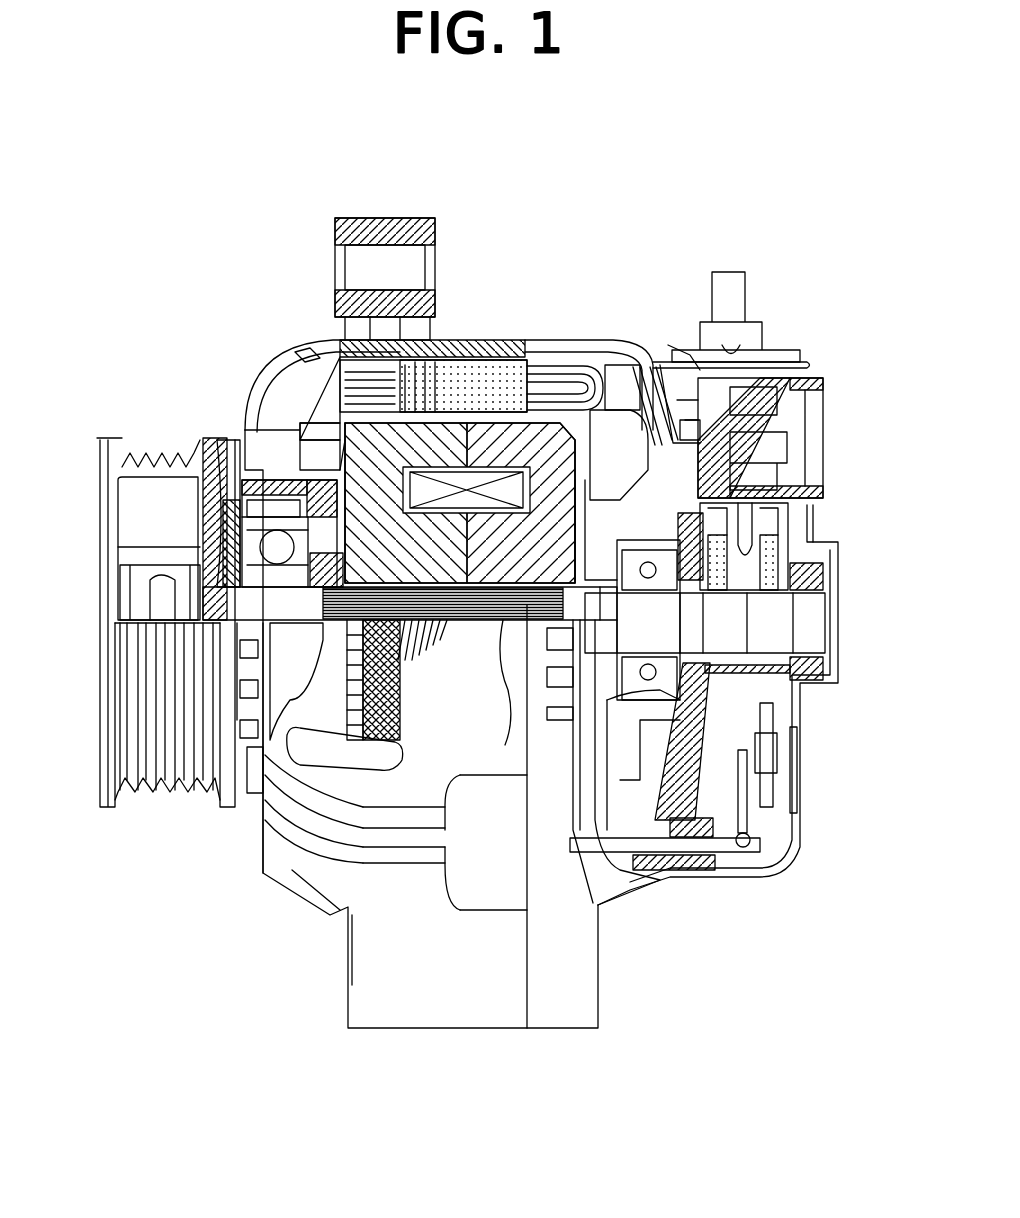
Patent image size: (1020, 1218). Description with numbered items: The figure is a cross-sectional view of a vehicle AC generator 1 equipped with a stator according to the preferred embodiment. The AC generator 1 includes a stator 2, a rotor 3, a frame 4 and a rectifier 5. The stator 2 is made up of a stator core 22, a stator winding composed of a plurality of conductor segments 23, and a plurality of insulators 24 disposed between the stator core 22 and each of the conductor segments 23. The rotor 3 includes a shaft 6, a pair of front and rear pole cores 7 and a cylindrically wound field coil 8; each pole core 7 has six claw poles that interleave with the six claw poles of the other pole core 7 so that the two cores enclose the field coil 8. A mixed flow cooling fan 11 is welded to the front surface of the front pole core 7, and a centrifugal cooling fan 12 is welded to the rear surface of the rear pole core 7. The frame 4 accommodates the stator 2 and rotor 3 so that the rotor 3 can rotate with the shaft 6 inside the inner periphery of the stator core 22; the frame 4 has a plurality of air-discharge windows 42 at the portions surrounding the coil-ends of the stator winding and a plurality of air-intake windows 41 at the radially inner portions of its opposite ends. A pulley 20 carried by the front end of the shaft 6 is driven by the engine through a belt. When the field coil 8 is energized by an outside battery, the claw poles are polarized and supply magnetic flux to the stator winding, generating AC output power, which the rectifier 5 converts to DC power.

The vehicle AC generator 1 is at (622, 198).
The stator 2 is at (632, 360).
The rotor 3 is at (297, 417).
The frame 4 is at (455, 355).
The rectifier 5 is at (760, 747).
The shaft 6 is at (227, 592).
The pole core 7 is at (340, 410).
The field coil 8 is at (465, 480).
The mixed flow cooling fan 11 is at (235, 470).
The centrifugal cooling fan 12 is at (630, 475).
The pulley 20 is at (105, 450).
The stator core 22 is at (455, 370).
The conductor segments 23 is at (597, 363).
The insulators 24 is at (560, 367).
The air-intake windows 41 is at (230, 500).
The air-discharge windows 42 is at (300, 357).